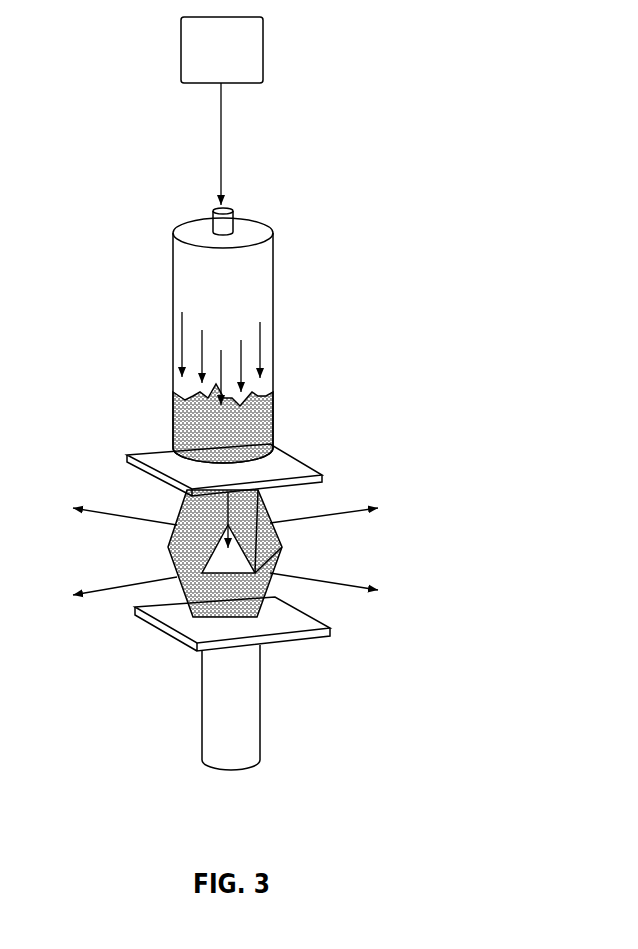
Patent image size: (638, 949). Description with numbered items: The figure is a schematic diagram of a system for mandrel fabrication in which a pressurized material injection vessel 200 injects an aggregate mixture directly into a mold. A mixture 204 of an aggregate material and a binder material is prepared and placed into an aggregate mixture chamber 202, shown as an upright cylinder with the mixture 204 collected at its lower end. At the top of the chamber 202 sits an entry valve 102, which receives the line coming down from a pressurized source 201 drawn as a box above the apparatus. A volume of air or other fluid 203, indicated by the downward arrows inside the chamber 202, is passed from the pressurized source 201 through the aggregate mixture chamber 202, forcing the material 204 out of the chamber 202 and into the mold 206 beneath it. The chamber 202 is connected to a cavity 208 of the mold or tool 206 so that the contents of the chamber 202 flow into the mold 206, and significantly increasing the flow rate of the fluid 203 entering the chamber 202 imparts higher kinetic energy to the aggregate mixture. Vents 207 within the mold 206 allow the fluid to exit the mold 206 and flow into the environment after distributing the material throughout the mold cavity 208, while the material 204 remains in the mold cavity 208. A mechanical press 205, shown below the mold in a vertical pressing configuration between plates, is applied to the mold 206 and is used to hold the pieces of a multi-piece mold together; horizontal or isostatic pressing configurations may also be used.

The pressurized material injection vessel 200 is at (309, 320).
The pressurized source 201 is at (263, 50).
The entry valve 102 is at (212, 216).
The aggregate mixture chamber 202 is at (172, 258).
The fluid 203 is at (176, 345).
The mixture 204 is at (180, 415).
The mechanical press 205 is at (310, 637).
The mold 206 is at (166, 505).
The vents 207 is at (282, 558).
The cavity 208 is at (261, 550).